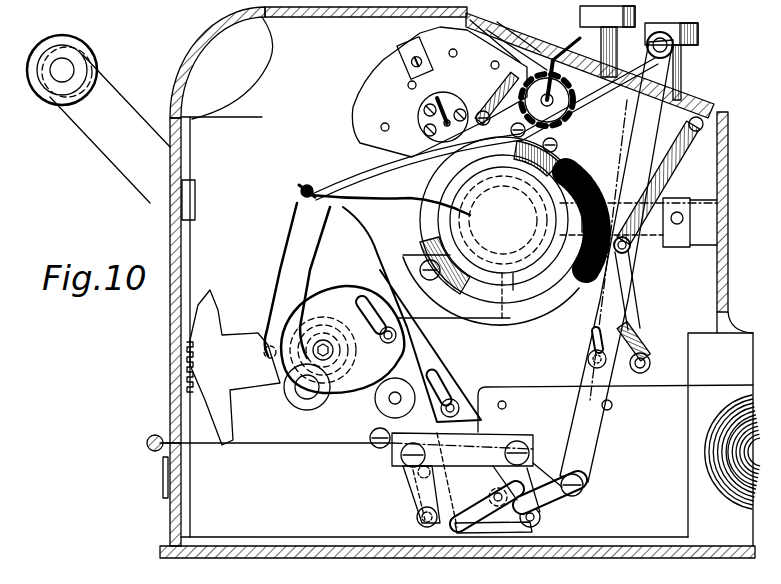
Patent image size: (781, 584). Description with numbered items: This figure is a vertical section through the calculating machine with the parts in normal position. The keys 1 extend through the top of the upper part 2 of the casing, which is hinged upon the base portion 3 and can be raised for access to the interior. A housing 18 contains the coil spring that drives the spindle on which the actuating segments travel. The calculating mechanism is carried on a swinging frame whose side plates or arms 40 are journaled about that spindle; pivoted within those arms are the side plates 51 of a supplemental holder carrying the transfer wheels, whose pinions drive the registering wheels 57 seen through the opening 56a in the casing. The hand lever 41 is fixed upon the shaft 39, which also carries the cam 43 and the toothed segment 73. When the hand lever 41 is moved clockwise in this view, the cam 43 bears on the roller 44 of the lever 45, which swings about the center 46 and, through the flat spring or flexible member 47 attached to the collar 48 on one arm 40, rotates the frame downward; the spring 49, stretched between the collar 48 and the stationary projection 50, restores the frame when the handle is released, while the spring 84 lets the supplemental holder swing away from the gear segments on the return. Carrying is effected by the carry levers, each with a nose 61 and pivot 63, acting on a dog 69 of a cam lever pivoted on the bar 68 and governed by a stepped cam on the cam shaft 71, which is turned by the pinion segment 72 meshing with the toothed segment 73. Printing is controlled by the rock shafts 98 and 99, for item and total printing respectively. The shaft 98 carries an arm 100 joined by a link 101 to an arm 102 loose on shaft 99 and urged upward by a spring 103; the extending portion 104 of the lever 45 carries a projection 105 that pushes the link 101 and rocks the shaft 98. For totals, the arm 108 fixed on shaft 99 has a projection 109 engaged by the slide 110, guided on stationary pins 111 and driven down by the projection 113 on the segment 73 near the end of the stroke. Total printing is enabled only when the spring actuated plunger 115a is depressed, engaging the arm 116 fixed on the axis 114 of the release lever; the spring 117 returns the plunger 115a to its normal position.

The keys 1 is at (693, 43).
The upper part of the casing 2 is at (722, 222).
The base portion 3 is at (160, 332).
The housing 18 is at (503, 220).
The shaft 39 is at (321, 348).
The side plates or arms 40 is at (487, 157).
The hand lever 41 is at (130, 157).
The cam 43 is at (336, 289).
The projection or roller 44 is at (303, 400).
The lever 45 is at (383, 200).
The center 46 is at (393, 403).
The flat spring or flexible member 47 is at (352, 178).
The collar 48 is at (530, 283).
The spring 49 is at (587, 173).
The stationary projection 50 is at (650, 364).
The side plates 51 is at (439, 92).
The opening 56a is at (518, 25).
The registering wheels 57 is at (440, 20).
The nose 61 is at (517, 40).
The pivot 63 is at (491, 65).
The bar 68 is at (454, 41).
The dog 69 is at (549, 62).
The cam shaft 71 is at (546, 92).
The pinion segment 72 is at (560, 78).
The toothed segment 73 is at (207, 365).
The spring 84 is at (497, 94).
The rock shaft 98 is at (541, 517).
The rock shaft 99 is at (417, 518).
The arm 100 is at (527, 453).
The link 101 is at (492, 453).
The arm 102 is at (418, 478).
The spring 103 is at (408, 497).
The extending portion 104 is at (362, 425).
The projection 105 is at (372, 430).
The arm 108 is at (452, 495).
The projection 109 is at (490, 427).
The slide 110 is at (442, 380).
The stationary pins 111 is at (456, 410).
The projection 113 is at (268, 353).
The axis 114 is at (552, 530).
The spring actuated plunger 115a is at (666, 114).
The arm 116 is at (565, 470).
The spring 117 is at (660, 247).